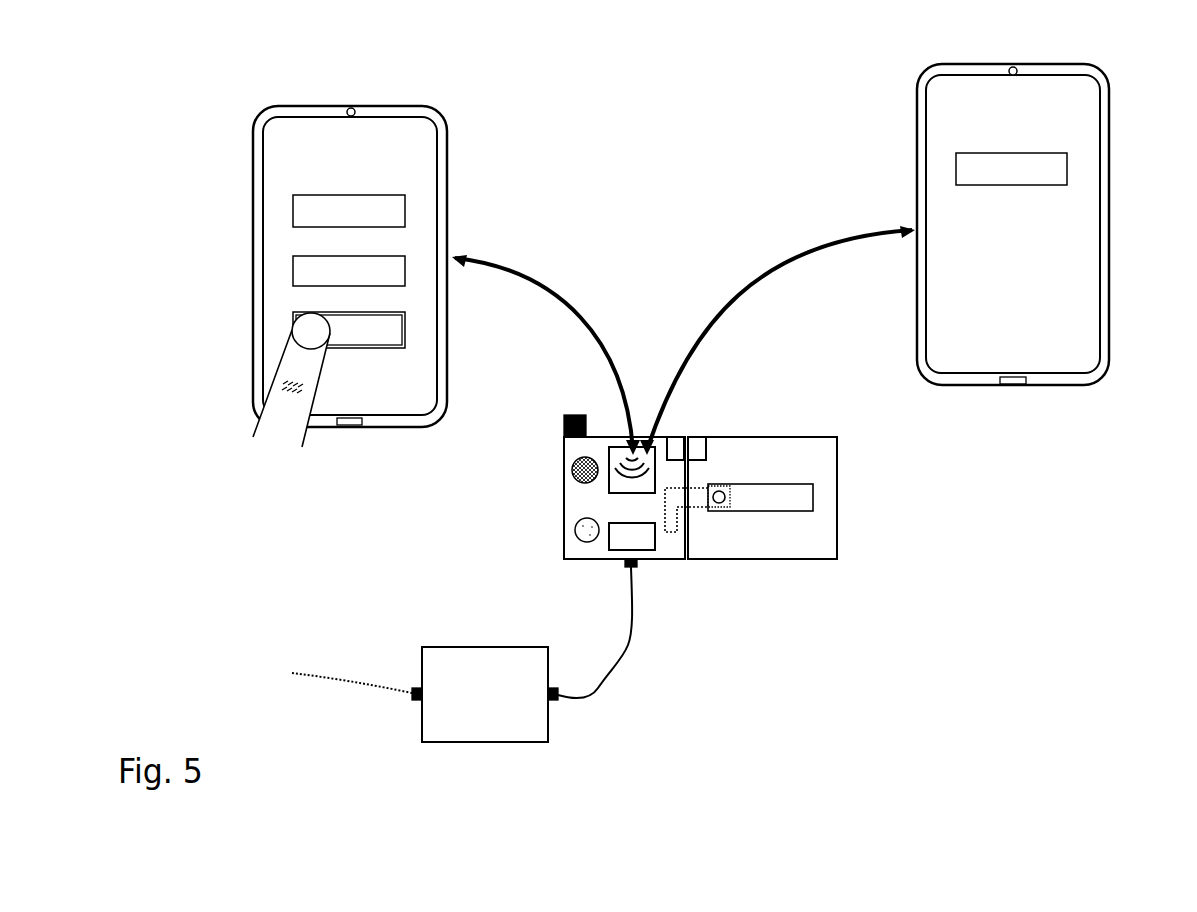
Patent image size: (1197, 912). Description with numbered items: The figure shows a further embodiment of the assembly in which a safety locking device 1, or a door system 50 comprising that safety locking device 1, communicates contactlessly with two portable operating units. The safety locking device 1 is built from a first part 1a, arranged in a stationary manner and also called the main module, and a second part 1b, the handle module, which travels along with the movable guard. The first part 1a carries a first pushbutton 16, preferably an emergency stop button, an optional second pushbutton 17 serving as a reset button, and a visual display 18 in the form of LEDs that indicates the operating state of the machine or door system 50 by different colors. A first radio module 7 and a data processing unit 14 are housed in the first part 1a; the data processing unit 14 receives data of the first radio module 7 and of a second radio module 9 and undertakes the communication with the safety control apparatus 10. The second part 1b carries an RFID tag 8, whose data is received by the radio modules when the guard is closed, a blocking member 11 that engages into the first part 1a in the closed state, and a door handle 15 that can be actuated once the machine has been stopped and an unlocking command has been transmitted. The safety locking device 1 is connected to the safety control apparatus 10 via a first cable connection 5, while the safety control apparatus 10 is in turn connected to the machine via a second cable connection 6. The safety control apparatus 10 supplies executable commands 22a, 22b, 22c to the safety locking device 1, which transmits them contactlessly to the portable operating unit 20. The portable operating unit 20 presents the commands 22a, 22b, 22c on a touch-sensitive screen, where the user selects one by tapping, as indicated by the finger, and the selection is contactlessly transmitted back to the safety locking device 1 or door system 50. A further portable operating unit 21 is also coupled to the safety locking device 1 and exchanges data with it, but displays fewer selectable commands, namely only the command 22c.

The safety locking device 1 is at (695, 490).
The door system 50 is at (768, 397).
The first part 1a is at (564, 559).
The second part 1b is at (837, 543).
The first cable connection 5 is at (598, 665).
The second cable connection 6 is at (327, 682).
The first radio module 7 is at (621, 482).
The RFID tag 8 is at (698, 443).
The second radio module 9 is at (675, 443).
The safety control apparatus 10 is at (490, 742).
The blocking member 11 is at (670, 523).
The data processing unit 14 is at (618, 542).
The door handle 15 is at (793, 497).
The first pushbutton 16 is at (572, 468).
The second pushbutton 17 is at (585, 532).
The visual display 18 is at (564, 420).
The portable operating unit 20 is at (260, 118).
The further portable operating unit 21 is at (1100, 73).
The executable command 22a is at (293, 212).
The executable command 22b is at (293, 265).
The executable command 22c is at (293, 313).